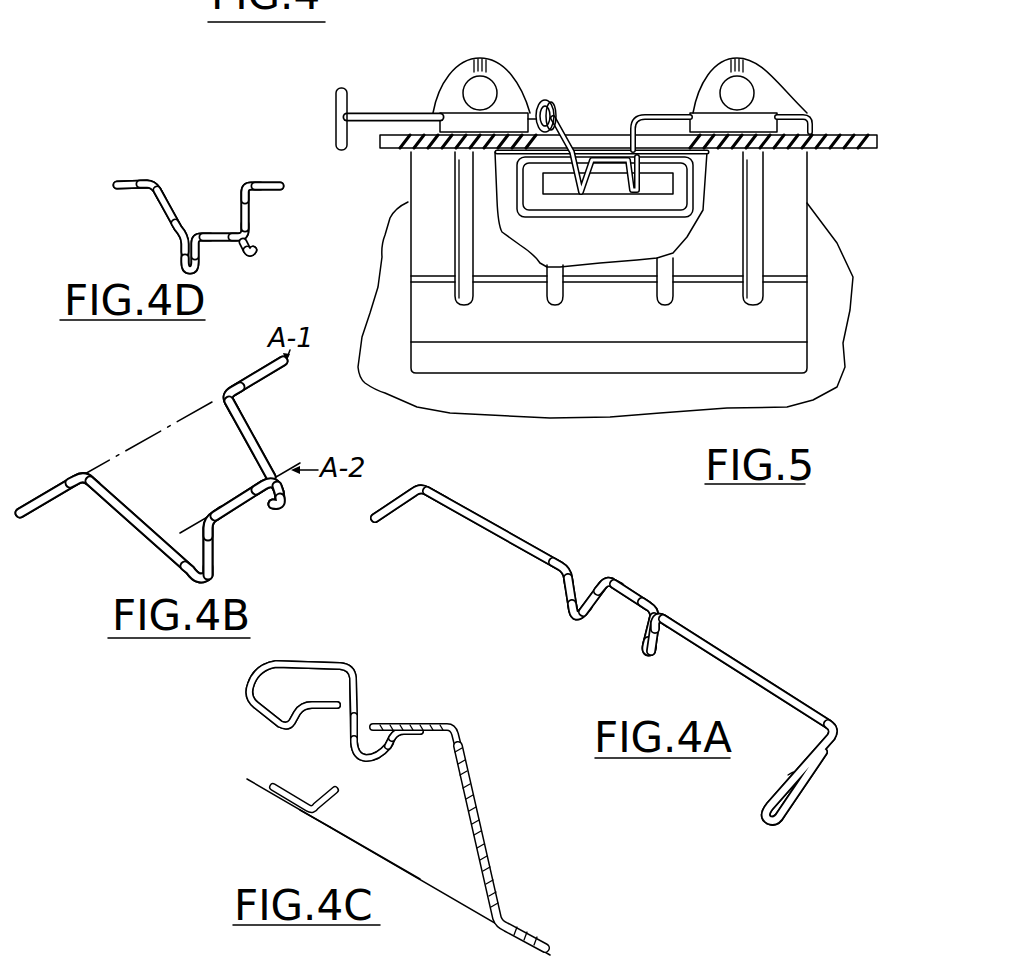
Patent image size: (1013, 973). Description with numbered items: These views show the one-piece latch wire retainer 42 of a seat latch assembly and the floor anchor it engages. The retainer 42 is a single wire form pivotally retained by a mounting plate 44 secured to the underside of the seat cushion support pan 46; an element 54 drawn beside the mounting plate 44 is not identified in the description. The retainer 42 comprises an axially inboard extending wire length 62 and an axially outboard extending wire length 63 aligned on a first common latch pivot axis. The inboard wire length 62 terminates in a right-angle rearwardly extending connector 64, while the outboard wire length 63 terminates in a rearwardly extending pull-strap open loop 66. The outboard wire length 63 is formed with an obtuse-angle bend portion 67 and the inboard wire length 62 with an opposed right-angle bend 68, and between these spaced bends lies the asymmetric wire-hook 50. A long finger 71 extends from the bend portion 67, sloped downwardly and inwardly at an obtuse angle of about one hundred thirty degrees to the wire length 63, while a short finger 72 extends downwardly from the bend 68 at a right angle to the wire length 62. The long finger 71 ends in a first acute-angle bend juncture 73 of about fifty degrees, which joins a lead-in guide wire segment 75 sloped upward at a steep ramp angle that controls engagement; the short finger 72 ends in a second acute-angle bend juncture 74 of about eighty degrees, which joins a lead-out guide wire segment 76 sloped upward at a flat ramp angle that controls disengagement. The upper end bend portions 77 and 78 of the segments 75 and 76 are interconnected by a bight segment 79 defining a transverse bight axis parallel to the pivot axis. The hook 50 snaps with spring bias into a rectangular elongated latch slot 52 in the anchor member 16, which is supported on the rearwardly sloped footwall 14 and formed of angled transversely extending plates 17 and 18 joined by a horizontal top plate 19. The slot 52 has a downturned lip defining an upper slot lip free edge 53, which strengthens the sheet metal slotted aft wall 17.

In FIG. 5, the rearwardly sloped footwall 14 is at (845, 283).
In FIG. 5, the anchor member 16 is at (409, 178).
In FIG. 4C, the anchor member 16 is at (494, 857).
In FIG. 5, the rearwardly angled transversely extending plate 17 is at (802, 187).
In FIG. 4C, the rearwardly angled transversely extending plate 17 is at (475, 787).
In FIG. 4C, the forwardly angled transversely extending plate 18 is at (330, 792).
In FIG. 5, the horizontal top plate 19 is at (585, 150).
In FIG. 4C, the horizontal top plate 19 is at (420, 726).
In FIG. 5, the one-piece latch wire retainer 42 is at (652, 108).
In FIG. 5, the mounting plate 44 is at (497, 60).
In FIG. 5, the seat cushion support pan 46 is at (848, 138).
In FIG. 5, the wire-hook 50 is at (615, 178).
In FIG. 4C, the latch slot 52 is at (343, 790).
In FIG. 4C, the slot lip free edge 53 is at (366, 726).
In FIG. 5, the coil spring 54 is at (538, 99).
In FIG. 5, the inboard extending wire length 62 is at (665, 114).
In FIG. 4D, the inboard extending wire length 62 is at (266, 183).
In FIG. 4B, the inboard extending wire length 62 is at (254, 367).
In FIG. 4A, the inboard extending wire length 62 is at (500, 530).
In FIG. 5, the outboard extending wire length 63 is at (397, 112).
In FIG. 4D, the outboard extending wire length 63 is at (123, 178).
In FIG. 4B, the outboard extending wire length 63 is at (42, 488).
In FIG. 4A, the outboard extending wire length 63 is at (775, 685).
In FIG. 4A, the right-angle rearwardly extending connector 64 is at (403, 500).
In FIG. 5, the pull-strap open loop 66 is at (345, 90).
In FIG. 4A, the pull-strap open loop 66 is at (790, 803).
In FIG. 4C, the pull-strap open loop 66 is at (313, 664).
In FIG. 4D, the obtuse-angle bend portion 67 is at (157, 178).
In FIG. 4B, the obtuse-angle bend portion 67 is at (87, 473).
In FIG. 4A, the obtuse-angle bend portion 67 is at (656, 618).
In FIG. 4D, the right-angle bend 68 is at (244, 184).
In FIG. 4B, the right-angle bend 68 is at (221, 392).
In FIG. 4A, the right-angle bend 68 is at (561, 577).
In FIG. 4D, the long finger 71 is at (160, 210).
In FIG. 4B, the long finger 71 is at (130, 527).
In FIG. 4A, the long finger 71 is at (645, 630).
In FIG. 4C, the long finger 71 is at (351, 737).
In FIG. 4D, the short finger 72 is at (250, 212).
In FIG. 4B, the short finger 72 is at (254, 445).
In FIG. 4A, the short finger 72 is at (572, 574).
In FIG. 4D, the first acute-angle bend juncture 73 is at (193, 270).
In FIG. 4B, the first acute-angle bend juncture 73 is at (192, 586).
In FIG. 4A, the first acute-angle bend juncture 73 is at (644, 654).
In FIG. 4C, the first acute-angle bend juncture 73 is at (365, 762).
In FIG. 4D, the second acute-angle bend juncture 74 is at (252, 256).
In FIG. 4B, the second acute-angle bend juncture 74 is at (278, 510).
In FIG. 4A, the second acute-angle bend juncture 74 is at (571, 619).
In FIG. 4D, the lead-in guide wire segment 75 is at (181, 252).
In FIG. 4B, the lead-in guide wire segment 75 is at (214, 547).
In FIG. 4A, the lead-in guide wire segment 75 is at (656, 640).
In FIG. 4C, the lead-in guide wire segment 75 is at (393, 752).
In FIG. 4D, the lead-out guide wire segment 76 is at (255, 244).
In FIG. 4B, the lead-out guide wire segment 76 is at (289, 498).
In FIG. 4A, the lead-out guide wire segment 76 is at (598, 582).
In FIG. 4C, the lead-out guide wire segment 76 is at (372, 730).
In FIG. 4D, the upper end bend portion 77 is at (192, 232).
In FIG. 4B, the upper end bend portion 77 is at (195, 520).
In FIG. 4A, the upper end bend portion 77 is at (659, 604).
In FIG. 4D, the upper end bend portion 78 is at (250, 234).
In FIG. 4B, the upper end bend portion 78 is at (286, 470).
In FIG. 4A, the upper end bend portion 78 is at (608, 585).
In FIG. 4D, the bight segment 79 is at (216, 232).
In FIG. 4B, the bight segment 79 is at (226, 503).
In FIG. 4A, the bight segment 79 is at (633, 594).